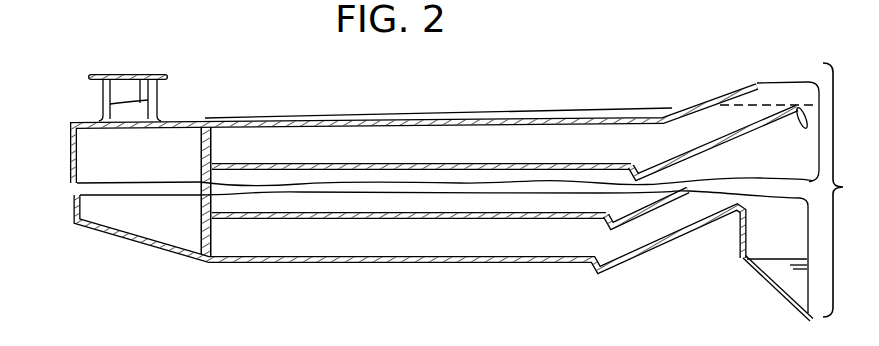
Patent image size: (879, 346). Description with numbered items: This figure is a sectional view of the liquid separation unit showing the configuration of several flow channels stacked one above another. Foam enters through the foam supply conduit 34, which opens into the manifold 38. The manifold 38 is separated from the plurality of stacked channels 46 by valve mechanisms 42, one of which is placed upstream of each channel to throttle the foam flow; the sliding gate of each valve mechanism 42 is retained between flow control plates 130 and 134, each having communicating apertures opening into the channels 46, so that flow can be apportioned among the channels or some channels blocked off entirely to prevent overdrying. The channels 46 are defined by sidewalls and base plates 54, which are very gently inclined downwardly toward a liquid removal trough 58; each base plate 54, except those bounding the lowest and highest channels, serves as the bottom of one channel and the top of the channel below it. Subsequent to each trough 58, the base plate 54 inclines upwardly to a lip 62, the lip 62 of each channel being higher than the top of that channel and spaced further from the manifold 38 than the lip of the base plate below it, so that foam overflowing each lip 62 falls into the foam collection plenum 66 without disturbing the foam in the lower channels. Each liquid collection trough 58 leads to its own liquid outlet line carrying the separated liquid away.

The foam supply conduit 34 is at (156, 93).
The manifold 38 is at (68, 159).
The valve mechanism 42 is at (194, 231).
The stacked channels 46 is at (490, 194).
The base plate 54 is at (381, 163).
The liquid removal trough 58 is at (619, 204).
The lip 62 is at (800, 99).
The foam collection plenum 66 is at (764, 295).
The flow control plate 130 is at (200, 152).
The flow control plate 134 is at (204, 147).